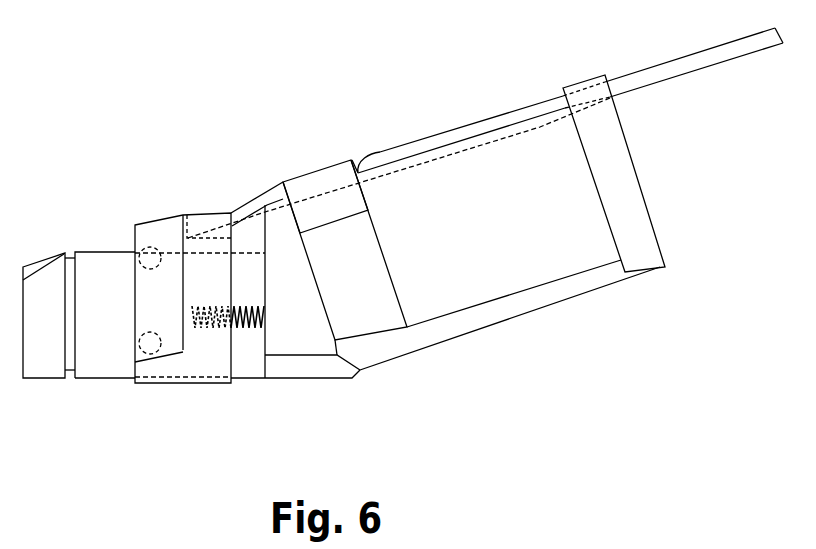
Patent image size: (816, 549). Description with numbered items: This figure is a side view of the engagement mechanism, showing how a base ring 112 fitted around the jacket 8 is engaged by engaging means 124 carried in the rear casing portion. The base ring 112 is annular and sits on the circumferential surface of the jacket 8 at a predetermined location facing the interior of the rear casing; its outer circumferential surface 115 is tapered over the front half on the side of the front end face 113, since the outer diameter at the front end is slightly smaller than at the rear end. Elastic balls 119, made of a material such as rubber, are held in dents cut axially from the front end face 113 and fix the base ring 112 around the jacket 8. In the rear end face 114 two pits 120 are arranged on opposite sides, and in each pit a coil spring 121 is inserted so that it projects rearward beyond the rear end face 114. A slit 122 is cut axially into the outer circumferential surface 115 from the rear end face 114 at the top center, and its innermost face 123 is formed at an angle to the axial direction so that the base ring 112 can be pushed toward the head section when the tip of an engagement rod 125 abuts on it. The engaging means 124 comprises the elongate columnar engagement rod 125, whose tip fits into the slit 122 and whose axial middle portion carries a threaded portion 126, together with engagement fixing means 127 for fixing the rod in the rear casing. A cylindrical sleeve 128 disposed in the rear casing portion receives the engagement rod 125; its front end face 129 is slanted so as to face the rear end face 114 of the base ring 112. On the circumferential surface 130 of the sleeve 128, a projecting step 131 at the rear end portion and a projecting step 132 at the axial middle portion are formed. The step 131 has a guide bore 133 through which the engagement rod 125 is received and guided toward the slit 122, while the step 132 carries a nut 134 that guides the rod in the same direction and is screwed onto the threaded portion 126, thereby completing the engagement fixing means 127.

The jacket 8 is at (93, 272).
The base ring 112 is at (151, 228).
The front end face 113 is at (135, 313).
The rear end face 114 is at (254, 258).
The outer circumferential surface 115 is at (182, 278).
The balls 119 is at (150, 338).
The pits 120 is at (207, 327).
The coil spring 121 is at (242, 330).
The slit 122 is at (200, 227).
The innermost face 123 is at (188, 222).
The engaging means 124 is at (238, 169).
The engagement rod 125 is at (423, 138).
The threaded portion 126 is at (320, 187).
The engagement fixing means 127 is at (351, 131).
The sleeve 128 is at (485, 283).
The front end face 129 is at (262, 296).
The circumferential surface 130 is at (413, 250).
The step 131 is at (580, 84).
The step 132 is at (303, 176).
The guide bore 133 is at (612, 95).
The nut 134 is at (380, 152).